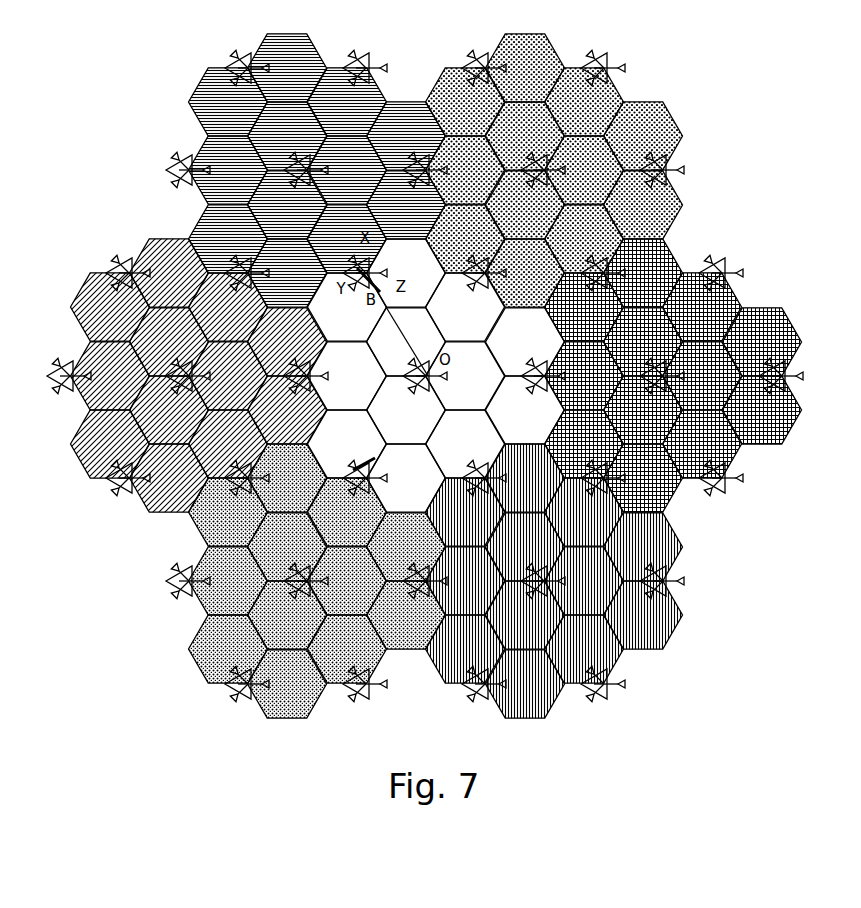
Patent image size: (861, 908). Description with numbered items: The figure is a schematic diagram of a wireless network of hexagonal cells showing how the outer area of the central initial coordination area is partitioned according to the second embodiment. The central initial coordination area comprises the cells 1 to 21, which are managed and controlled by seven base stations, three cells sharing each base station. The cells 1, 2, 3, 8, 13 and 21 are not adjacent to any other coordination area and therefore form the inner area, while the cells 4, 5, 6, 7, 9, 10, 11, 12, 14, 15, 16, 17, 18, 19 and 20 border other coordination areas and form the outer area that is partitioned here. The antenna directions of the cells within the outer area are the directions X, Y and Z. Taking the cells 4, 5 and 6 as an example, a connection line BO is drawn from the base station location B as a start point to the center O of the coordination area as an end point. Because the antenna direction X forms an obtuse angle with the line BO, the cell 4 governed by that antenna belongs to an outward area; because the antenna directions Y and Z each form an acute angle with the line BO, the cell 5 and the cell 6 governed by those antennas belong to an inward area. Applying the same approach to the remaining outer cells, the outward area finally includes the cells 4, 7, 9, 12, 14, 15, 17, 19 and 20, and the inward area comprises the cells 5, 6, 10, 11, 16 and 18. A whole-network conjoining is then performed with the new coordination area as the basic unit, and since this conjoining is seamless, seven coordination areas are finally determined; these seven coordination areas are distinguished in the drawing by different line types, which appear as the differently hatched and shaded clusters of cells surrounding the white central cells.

The cell 1 is at (406, 342).
The cell 2 is at (406, 410).
The cell 3 is at (465, 376).
The cell 4 is at (347, 239).
The cell 5 is at (347, 307).
The cell 6 is at (406, 273).
The cell 7 is at (465, 239).
The cell 8 is at (465, 307).
The cell 9 is at (525, 273).
The cell 10 is at (525, 342).
The cell 11 is at (525, 410).
The cell 12 is at (584, 376).
The cell 13 is at (465, 444).
The cell 14 is at (465, 512).
The cell 15 is at (525, 478).
The cell 16 is at (347, 444).
The cell 17 is at (347, 512).
The cell 18 is at (406, 478).
The cell 19 is at (287, 342).
The cell 20 is at (287, 410).
The cell 21 is at (347, 376).